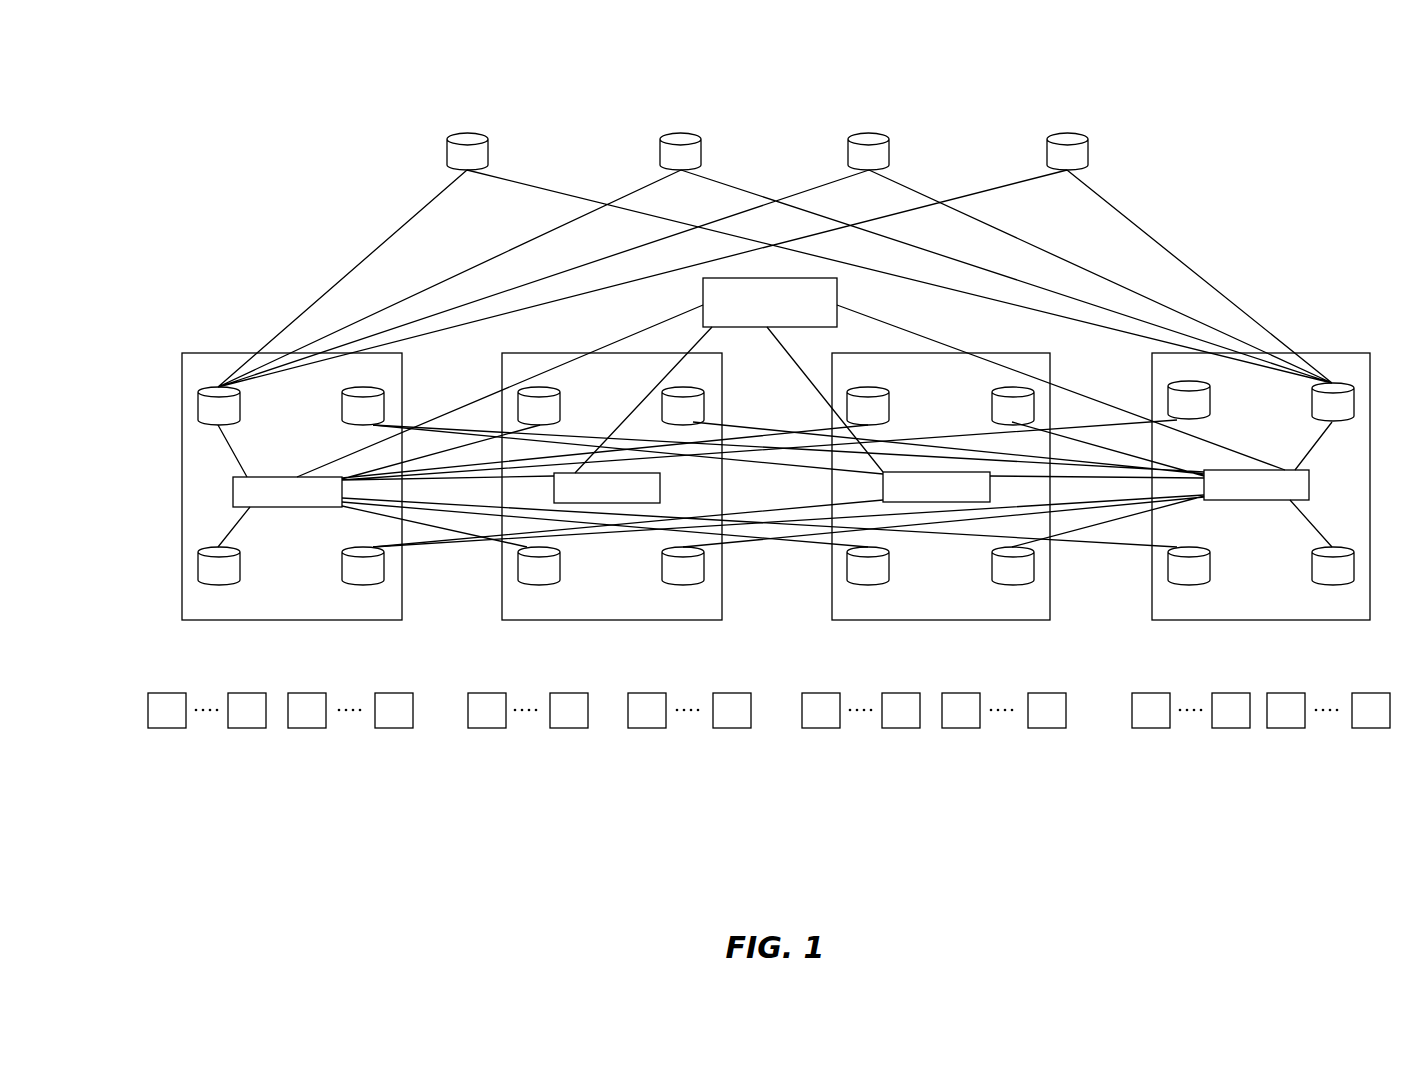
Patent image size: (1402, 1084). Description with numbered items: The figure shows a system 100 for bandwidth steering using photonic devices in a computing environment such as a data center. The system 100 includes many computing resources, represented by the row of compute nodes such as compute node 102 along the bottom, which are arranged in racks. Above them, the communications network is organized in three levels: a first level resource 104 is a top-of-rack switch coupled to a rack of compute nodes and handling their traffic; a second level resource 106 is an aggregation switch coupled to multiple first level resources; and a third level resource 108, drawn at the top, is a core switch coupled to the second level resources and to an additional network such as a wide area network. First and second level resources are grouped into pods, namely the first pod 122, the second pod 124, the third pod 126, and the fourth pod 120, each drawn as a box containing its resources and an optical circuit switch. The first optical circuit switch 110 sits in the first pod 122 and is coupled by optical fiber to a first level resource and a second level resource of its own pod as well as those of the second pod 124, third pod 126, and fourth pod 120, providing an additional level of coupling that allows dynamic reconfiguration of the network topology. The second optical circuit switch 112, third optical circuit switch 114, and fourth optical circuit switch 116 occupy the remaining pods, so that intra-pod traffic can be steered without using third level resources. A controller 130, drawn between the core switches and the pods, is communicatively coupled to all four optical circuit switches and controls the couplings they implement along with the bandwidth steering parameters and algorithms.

The system 100 is at (1286, 96).
The compute node 102 is at (305, 728).
The first level resource 104 is at (677, 600).
The second level resource 106 is at (220, 387).
The third level resource 108 is at (867, 132).
The first optical circuit switch 110 is at (270, 507).
The second optical circuit switch 112 is at (597, 503).
The third optical circuit switch 114 is at (920, 502).
The fourth optical circuit switch 116 is at (1265, 500).
The fourth pod 120 is at (1152, 620).
The first pod 122 is at (183, 548).
The second pod 124 is at (503, 600).
The third pod 126 is at (832, 567).
The controller 130 is at (765, 278).